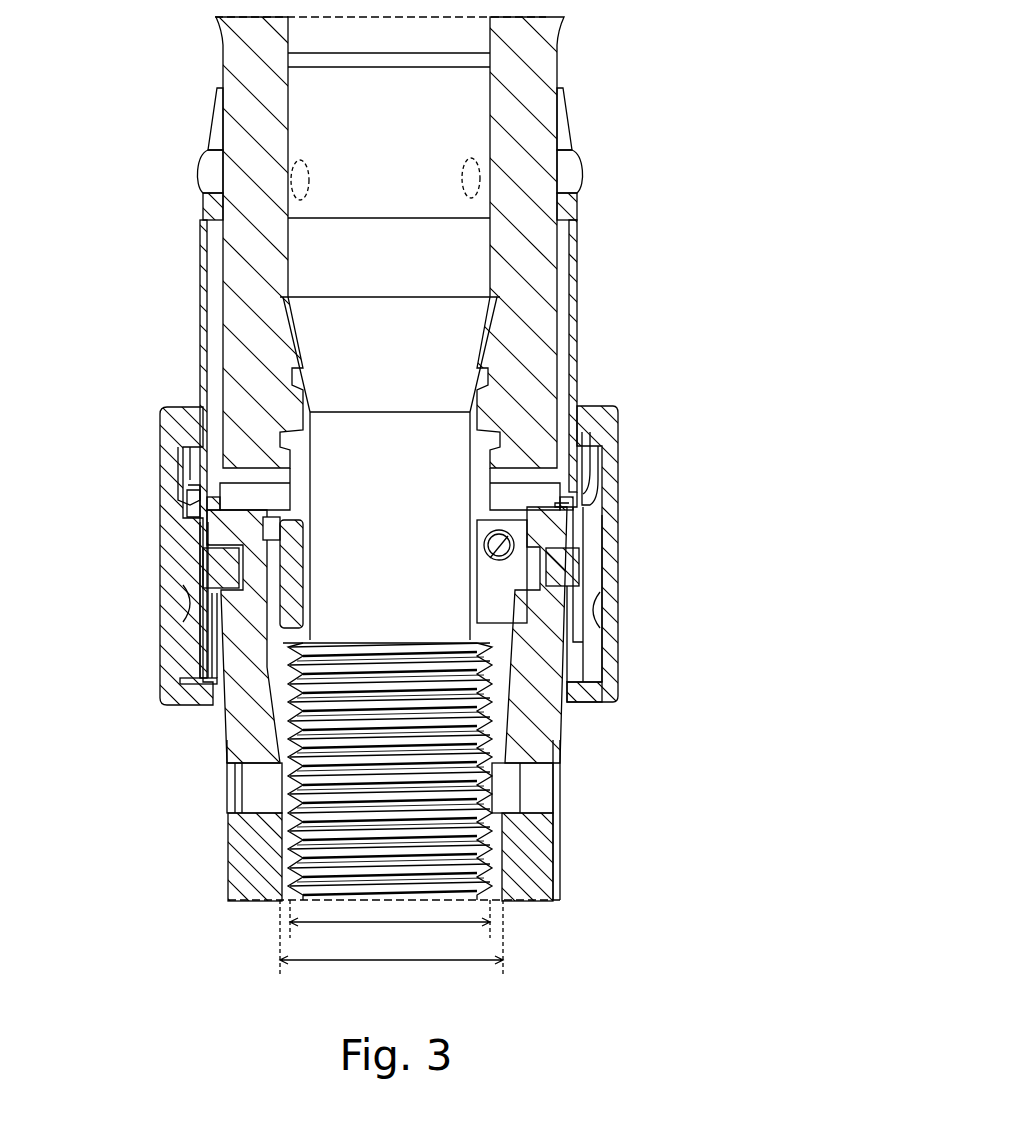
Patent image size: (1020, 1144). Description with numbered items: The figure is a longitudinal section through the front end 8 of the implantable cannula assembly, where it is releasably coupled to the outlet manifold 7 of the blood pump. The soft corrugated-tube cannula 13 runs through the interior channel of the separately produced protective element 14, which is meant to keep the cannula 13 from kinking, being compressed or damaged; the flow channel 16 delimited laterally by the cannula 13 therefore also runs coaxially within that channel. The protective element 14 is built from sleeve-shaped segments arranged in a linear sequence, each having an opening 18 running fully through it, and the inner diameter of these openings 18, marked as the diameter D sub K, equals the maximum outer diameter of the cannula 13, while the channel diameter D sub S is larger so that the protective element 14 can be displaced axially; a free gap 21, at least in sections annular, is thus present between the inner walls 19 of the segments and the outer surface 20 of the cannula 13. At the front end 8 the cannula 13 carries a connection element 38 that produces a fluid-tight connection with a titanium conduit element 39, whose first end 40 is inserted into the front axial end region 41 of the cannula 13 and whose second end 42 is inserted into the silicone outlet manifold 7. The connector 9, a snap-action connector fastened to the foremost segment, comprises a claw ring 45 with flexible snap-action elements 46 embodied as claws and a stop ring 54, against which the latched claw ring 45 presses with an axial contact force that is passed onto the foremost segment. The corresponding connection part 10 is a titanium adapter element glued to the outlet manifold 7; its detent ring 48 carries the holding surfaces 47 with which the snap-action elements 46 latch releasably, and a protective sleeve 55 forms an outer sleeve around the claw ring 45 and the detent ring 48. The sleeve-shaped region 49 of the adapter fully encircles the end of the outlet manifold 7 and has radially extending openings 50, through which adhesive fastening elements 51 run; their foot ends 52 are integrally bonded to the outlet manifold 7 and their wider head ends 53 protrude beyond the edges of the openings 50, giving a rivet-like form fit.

The outlet manifold 7 is at (240, 55).
The front end 8 is at (717, 570).
The connector 9 is at (634, 611).
The connection part 10 is at (577, 273).
The cannula 13 is at (470, 735).
The protective element 14 is at (250, 880).
The flow channel 16 is at (497, 848).
The opening 18 is at (487, 897).
The inner wall 19 is at (290, 848).
The outer surface 20 is at (293, 789).
The free gap 21 is at (505, 880).
The connection element 38 is at (233, 533).
The conduit element 39 is at (230, 499).
The first end 40 is at (330, 615).
The front axial end region 41 is at (207, 681).
The second end 42 is at (303, 316).
The claw ring 45 is at (603, 688).
The snap-action element 46 is at (618, 526).
The holding surface 47 is at (590, 494).
The detent ring 48 is at (593, 453).
The sleeve-shaped region 49 is at (208, 226).
The opening 50 is at (470, 178).
The fastening element 51 is at (205, 208).
The foot end 52 is at (198, 187).
The head end 53 is at (575, 147).
The stop ring 54 is at (210, 563).
The protective sleeve 55 is at (620, 647).